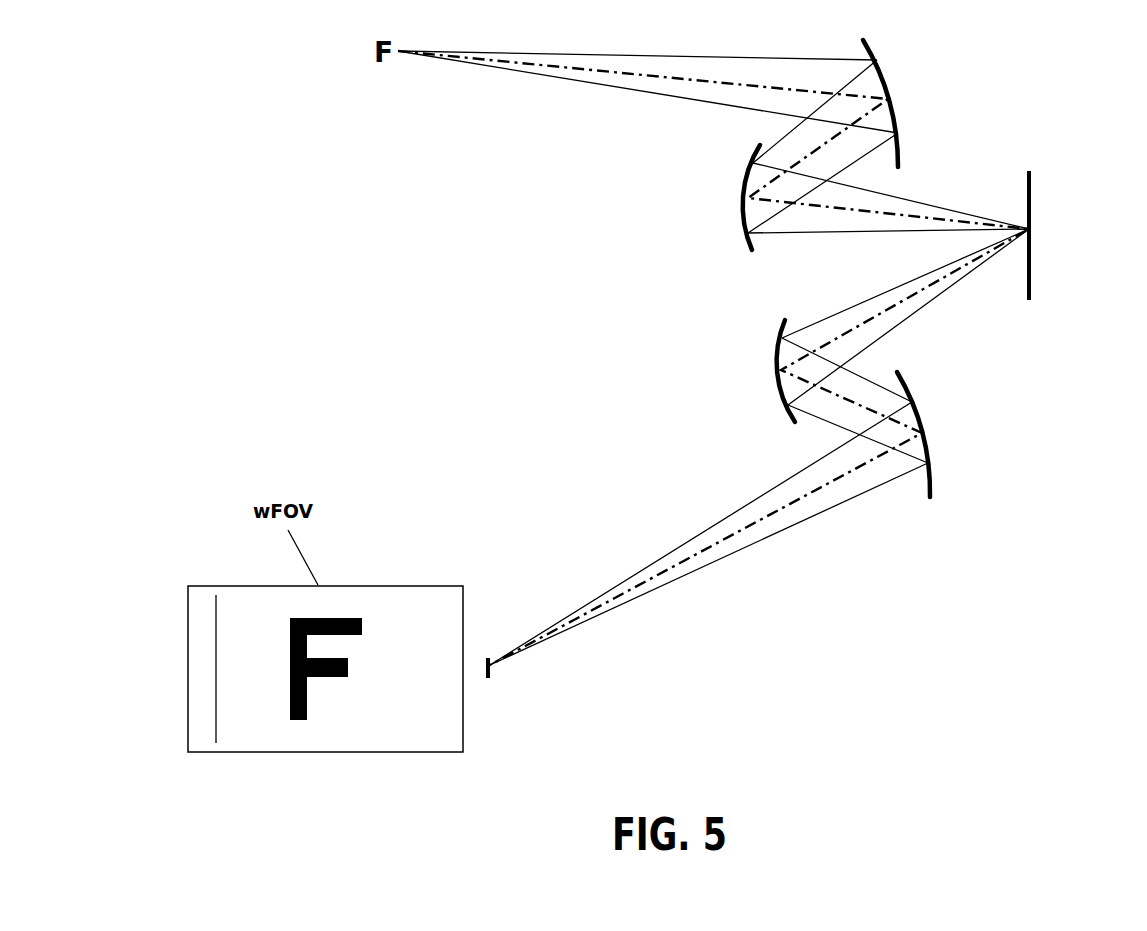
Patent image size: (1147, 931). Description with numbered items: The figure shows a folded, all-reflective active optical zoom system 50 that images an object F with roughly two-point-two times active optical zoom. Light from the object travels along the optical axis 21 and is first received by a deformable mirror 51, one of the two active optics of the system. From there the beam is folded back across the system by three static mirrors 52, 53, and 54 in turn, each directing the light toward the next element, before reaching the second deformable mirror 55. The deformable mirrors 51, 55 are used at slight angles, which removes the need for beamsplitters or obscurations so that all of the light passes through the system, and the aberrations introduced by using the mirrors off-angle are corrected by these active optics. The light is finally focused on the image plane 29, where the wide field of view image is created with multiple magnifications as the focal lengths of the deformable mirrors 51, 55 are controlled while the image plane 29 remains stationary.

The optical axis 21 is at (547, 67).
The image plane 29 is at (488, 680).
The folded, all-reflective active optical zoom system 50 is at (430, 284).
The deformable mirror 51 is at (877, 53).
The static mirror 52 is at (742, 217).
The static mirror 53 is at (1031, 277).
The static mirror 54 is at (778, 387).
The deformable mirror 55 is at (935, 483).